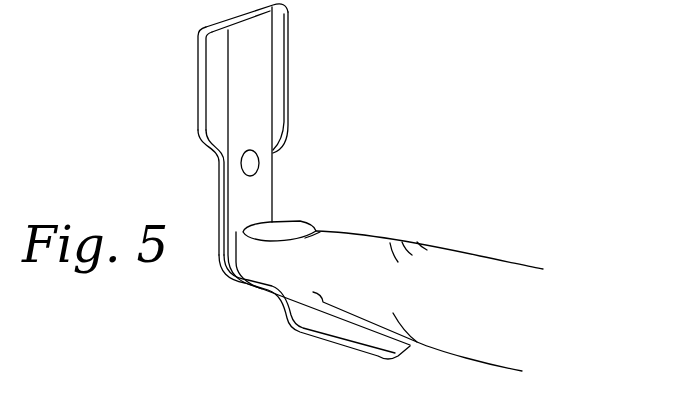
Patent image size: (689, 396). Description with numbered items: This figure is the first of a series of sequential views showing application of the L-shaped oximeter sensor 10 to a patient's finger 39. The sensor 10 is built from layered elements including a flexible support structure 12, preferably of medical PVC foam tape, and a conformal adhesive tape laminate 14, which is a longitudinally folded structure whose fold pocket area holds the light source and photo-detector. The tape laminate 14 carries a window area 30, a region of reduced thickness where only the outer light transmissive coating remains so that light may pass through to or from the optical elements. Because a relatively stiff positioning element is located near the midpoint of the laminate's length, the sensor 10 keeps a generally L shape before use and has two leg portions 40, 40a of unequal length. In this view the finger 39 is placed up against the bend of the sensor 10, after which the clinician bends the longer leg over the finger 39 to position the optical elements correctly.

The L-shaped oximeter sensor 10 is at (333, 85).
The flexible support structure 12 is at (215, 87).
The conformal adhesive tape laminate 14 is at (258, 60).
The window area 30 is at (253, 163).
The finger 39 is at (347, 247).
The leg portion 40 is at (220, 136).
The leg portion 40a is at (290, 313).